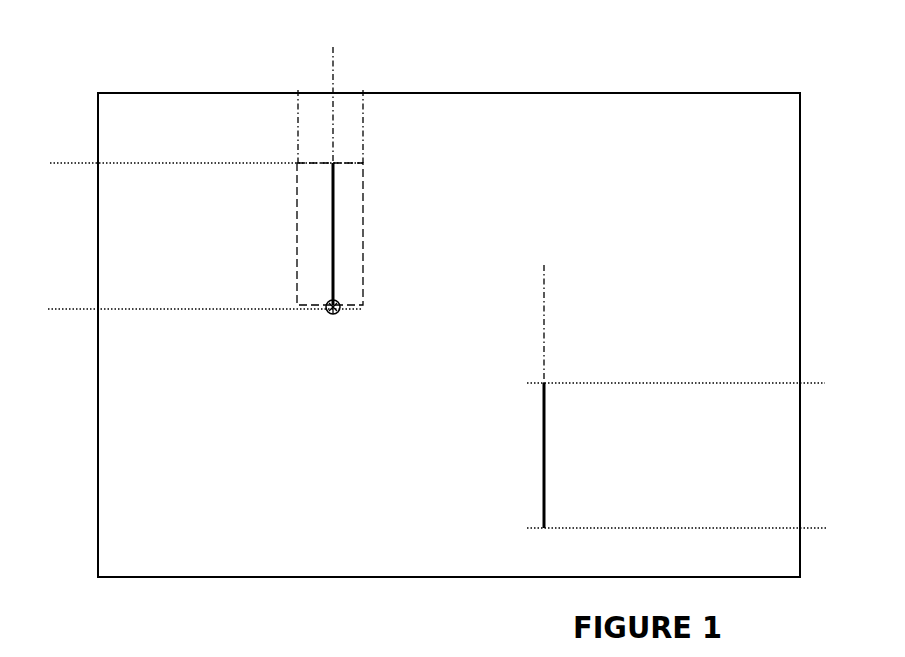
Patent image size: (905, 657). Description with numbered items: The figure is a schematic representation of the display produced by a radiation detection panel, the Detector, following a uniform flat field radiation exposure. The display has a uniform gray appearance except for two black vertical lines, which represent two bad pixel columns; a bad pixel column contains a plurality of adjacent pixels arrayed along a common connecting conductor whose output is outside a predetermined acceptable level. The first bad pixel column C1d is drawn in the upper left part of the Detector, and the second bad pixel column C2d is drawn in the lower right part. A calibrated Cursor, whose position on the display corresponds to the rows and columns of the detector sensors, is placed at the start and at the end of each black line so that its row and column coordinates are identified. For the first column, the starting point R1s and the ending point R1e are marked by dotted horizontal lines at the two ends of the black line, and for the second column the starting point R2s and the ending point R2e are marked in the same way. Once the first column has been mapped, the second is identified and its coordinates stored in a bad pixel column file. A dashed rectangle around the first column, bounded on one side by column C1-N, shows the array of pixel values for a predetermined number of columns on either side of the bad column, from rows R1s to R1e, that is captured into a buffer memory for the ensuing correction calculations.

The detector Detector is at (787, 67).
The bad pixel column C1 C1d is at (332, 158).
The column C1-N is at (286, 81).
The ending point R1e is at (189, 143).
The starting point R1s is at (193, 291).
The calibrated cursor Cursor is at (319, 326).
The bad pixel column C2 C2d is at (552, 380).
The ending point R2e is at (696, 363).
The starting point R2s is at (692, 510).